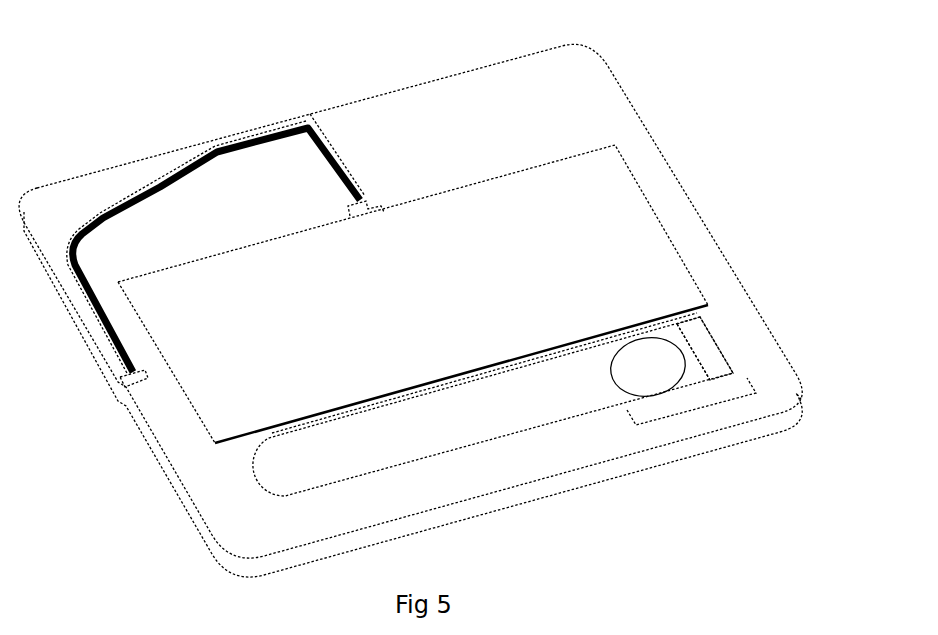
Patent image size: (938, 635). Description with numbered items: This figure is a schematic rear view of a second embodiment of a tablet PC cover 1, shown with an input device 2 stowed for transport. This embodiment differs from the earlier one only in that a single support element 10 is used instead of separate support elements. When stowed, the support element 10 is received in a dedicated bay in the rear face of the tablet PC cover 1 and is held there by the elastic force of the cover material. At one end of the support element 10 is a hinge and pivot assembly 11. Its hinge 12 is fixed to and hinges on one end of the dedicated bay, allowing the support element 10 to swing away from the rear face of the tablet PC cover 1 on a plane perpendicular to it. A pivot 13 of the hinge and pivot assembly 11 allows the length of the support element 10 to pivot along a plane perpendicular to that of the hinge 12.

The tablet PC cover 1 is at (530, 107).
The input device 2 is at (565, 200).
The support element 10 is at (540, 403).
The hinge and pivot assembly 11 is at (693, 408).
The hinge 12 is at (710, 360).
The pivot 13 is at (650, 358).